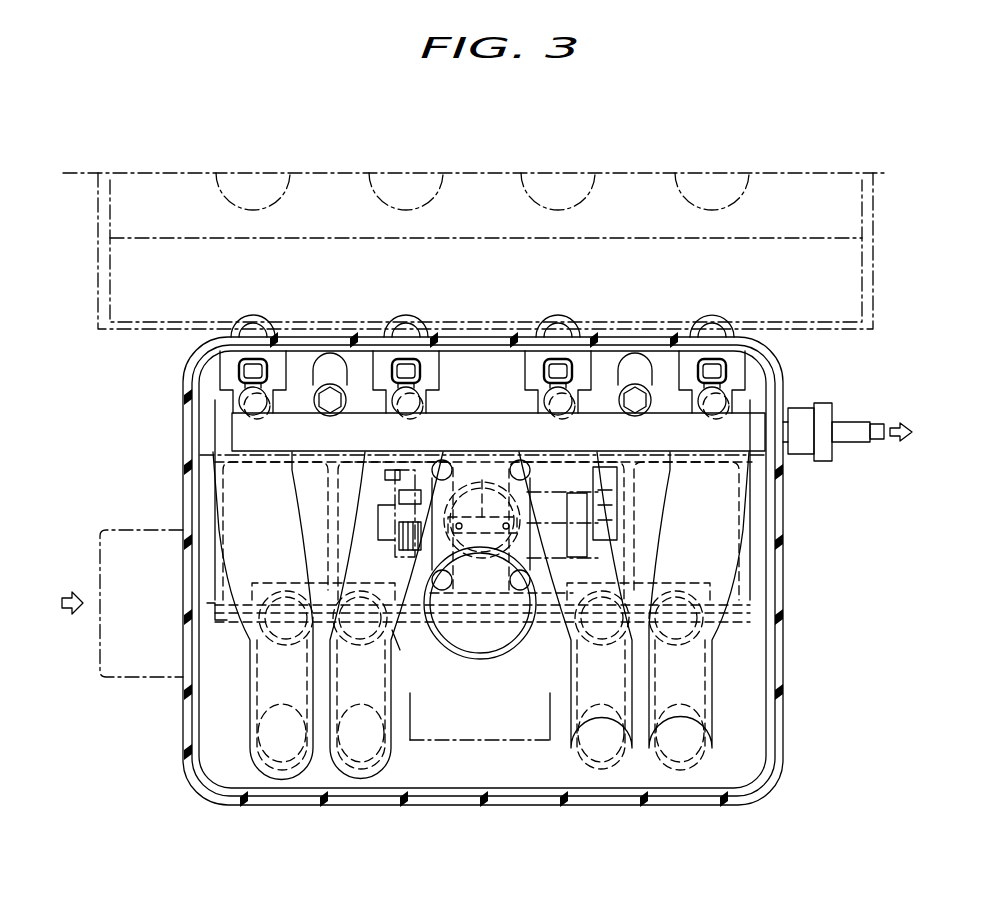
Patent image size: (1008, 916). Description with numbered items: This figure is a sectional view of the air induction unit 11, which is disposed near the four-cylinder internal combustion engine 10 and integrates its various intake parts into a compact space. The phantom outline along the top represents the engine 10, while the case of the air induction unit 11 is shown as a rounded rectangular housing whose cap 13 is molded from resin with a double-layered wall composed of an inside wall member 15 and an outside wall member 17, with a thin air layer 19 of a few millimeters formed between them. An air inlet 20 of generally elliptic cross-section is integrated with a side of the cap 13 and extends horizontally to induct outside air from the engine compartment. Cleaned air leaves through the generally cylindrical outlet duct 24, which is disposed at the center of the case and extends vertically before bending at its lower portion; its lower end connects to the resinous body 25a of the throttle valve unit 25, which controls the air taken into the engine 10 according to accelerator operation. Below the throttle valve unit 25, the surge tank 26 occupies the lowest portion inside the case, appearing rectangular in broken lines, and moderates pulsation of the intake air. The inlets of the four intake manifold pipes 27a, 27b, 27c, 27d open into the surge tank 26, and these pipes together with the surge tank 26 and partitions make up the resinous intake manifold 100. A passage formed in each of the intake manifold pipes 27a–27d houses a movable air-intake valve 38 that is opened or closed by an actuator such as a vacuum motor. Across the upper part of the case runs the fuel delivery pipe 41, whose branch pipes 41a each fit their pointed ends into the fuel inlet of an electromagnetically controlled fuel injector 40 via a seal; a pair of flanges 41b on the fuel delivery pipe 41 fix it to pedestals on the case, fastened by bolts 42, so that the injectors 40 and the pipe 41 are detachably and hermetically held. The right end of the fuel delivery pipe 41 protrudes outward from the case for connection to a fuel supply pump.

The internal combustion engine 10 is at (787, 267).
The air induction unit 11 is at (467, 569).
The cap 13 is at (515, 569).
The inside wall member 15 is at (758, 568).
The outside wall member 17 is at (783, 746).
The air layer 19 is at (773, 629).
The air inlet 20 is at (127, 678).
The outlet duct 24 is at (490, 667).
The throttle valve unit 25 is at (485, 508).
The resinous body 25a is at (470, 487).
The surge tank 26 is at (700, 463).
The intake manifold pipe 27a is at (253, 660).
The intake manifold pipe 27b is at (392, 722).
The intake manifold pipe 27c is at (566, 702).
The intake manifold pipe 27d is at (714, 680).
The movable air-intake valve 38 is at (262, 642).
The fuel injector 40 is at (393, 377).
The fuel delivery pipe 41 is at (755, 425).
The branch pipe 41a is at (393, 400).
The flange 41b is at (333, 393).
The bolt 42 is at (322, 398).
The intake manifold 100 is at (399, 638).